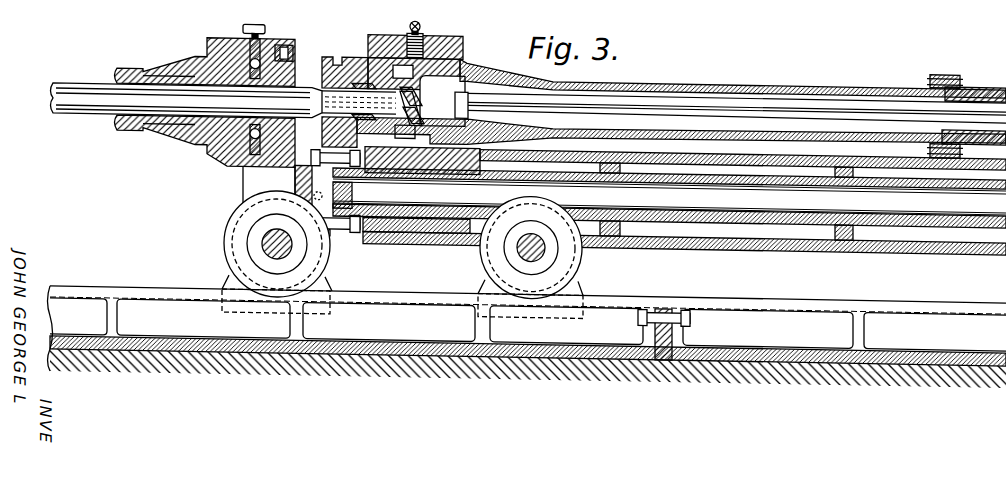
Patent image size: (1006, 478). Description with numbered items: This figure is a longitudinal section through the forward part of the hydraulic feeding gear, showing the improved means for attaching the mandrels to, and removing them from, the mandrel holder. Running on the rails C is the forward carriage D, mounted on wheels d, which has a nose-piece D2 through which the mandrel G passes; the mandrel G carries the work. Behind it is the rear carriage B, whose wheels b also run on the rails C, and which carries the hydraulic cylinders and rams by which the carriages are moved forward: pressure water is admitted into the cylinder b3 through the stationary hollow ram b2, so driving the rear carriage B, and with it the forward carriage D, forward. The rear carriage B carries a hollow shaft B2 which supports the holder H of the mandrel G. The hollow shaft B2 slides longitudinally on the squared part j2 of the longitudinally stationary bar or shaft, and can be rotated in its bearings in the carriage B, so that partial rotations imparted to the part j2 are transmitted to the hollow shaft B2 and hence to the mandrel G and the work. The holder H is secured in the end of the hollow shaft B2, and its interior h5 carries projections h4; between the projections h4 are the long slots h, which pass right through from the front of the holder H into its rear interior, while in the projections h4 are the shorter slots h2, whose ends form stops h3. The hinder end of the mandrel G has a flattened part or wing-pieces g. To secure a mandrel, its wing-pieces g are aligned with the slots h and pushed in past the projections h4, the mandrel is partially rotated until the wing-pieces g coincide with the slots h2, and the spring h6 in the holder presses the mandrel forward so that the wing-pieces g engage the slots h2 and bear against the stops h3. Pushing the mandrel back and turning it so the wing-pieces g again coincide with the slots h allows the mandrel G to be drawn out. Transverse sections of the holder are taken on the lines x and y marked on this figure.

The mandrel G is at (224, 101).
The nose-piece D2 is at (205, 94).
The forward carriage D is at (248, 176).
The holder H is at (335, 100).
The section line x- x is at (352, 52).
The projections h4 is at (392, 52).
The section line y- y is at (404, 80).
The wing-pieces g is at (364, 104).
The slots h2 is at (425, 84).
The interior of holder h5 is at (425, 100).
The spring h6 is at (424, 117).
The hollow shaft B2 is at (671, 75).
The squared part of bar or shaft j2 is at (840, 93).
The stops h3 is at (422, 161).
The slots h is at (318, 116).
The rear carriage B is at (741, 226).
The cylinder b3 is at (410, 219).
The stationary hollow ram b2 is at (669, 198).
The wheels d is at (277, 252).
The wheels b is at (530, 257).
The rails C is at (665, 297).